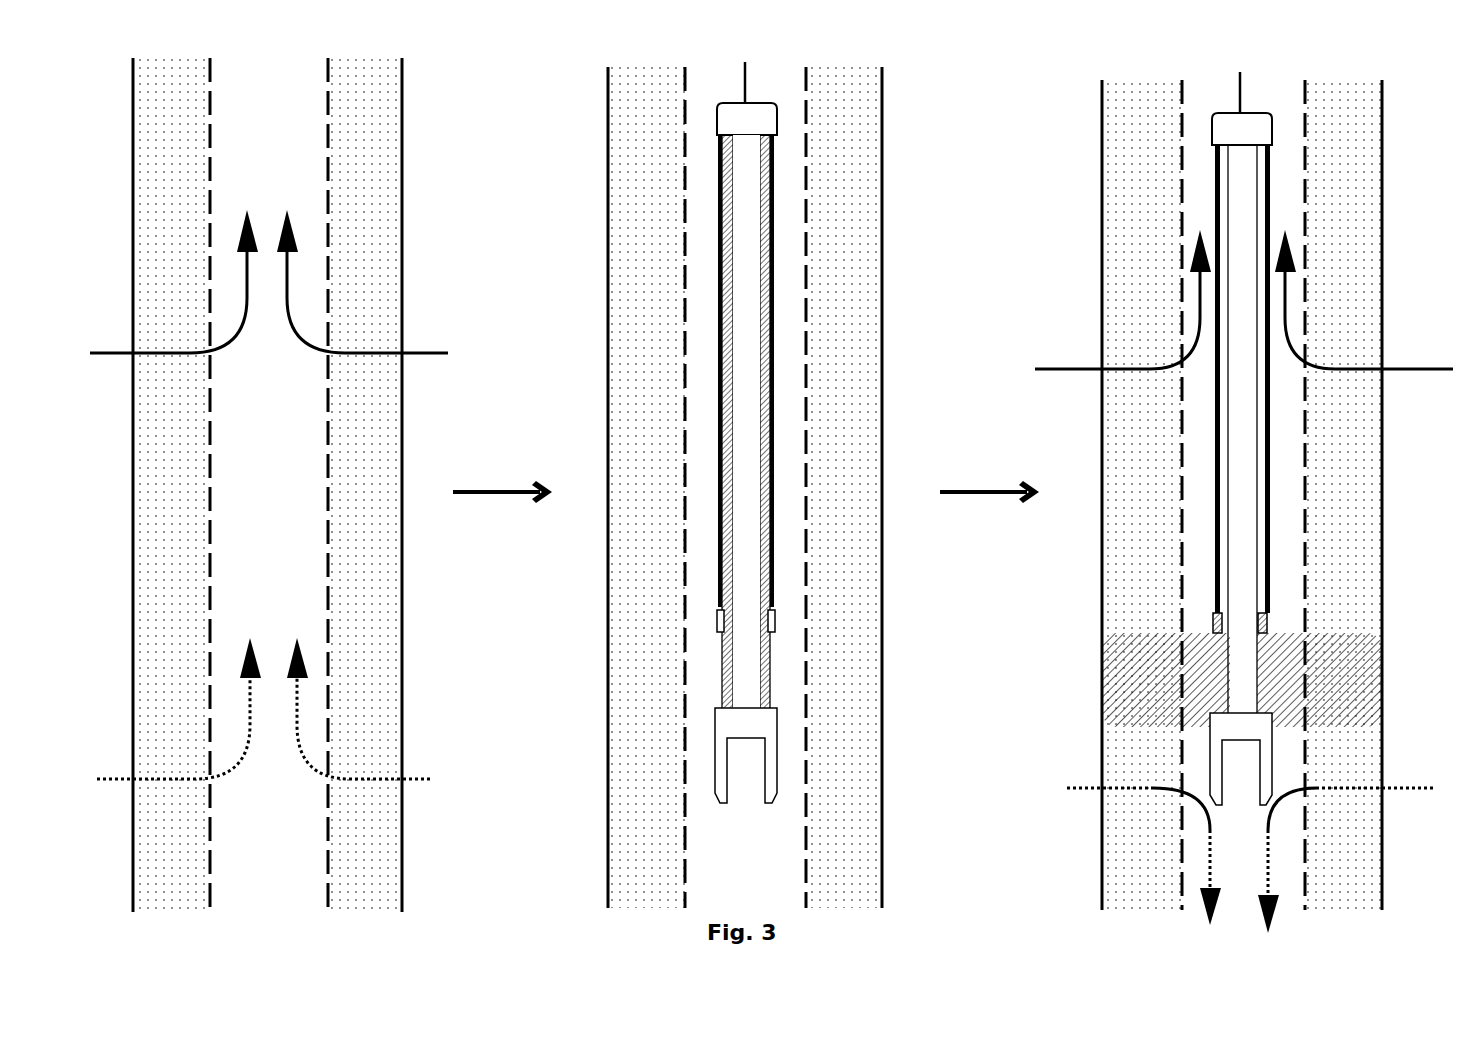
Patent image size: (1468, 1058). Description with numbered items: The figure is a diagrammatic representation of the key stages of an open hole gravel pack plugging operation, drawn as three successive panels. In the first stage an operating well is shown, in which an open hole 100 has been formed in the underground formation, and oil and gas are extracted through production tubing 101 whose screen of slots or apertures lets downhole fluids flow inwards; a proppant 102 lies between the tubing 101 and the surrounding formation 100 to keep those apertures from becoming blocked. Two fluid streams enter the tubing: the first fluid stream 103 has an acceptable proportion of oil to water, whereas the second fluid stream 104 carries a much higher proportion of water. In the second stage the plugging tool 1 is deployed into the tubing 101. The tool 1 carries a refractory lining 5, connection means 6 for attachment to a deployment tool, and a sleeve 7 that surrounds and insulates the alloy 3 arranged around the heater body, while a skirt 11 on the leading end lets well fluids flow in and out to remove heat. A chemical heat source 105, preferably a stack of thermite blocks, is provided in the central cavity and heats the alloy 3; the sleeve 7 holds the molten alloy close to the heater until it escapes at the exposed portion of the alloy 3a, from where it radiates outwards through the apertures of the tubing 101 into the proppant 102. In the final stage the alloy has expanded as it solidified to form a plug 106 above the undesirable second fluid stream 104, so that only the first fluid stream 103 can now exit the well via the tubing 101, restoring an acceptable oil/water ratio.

The well plugging/sealing tool 1 is at (765, 442).
The alloy 3 is at (772, 367).
The exposed portion of the alloy 3a is at (700, 684).
The lining of refractory material 5 is at (728, 117).
The connection means 6 is at (773, 633).
The sleeve 7 is at (720, 405).
The skirt 11 is at (725, 740).
The open hole 100 is at (403, 157).
The production tubing 101 is at (215, 153).
The proppant 102 is at (382, 887).
The first fluid stream 103 is at (427, 775).
The second fluid stream 104 is at (428, 347).
The chemical heat source 105 is at (747, 308).
The plug 106 is at (1367, 642).